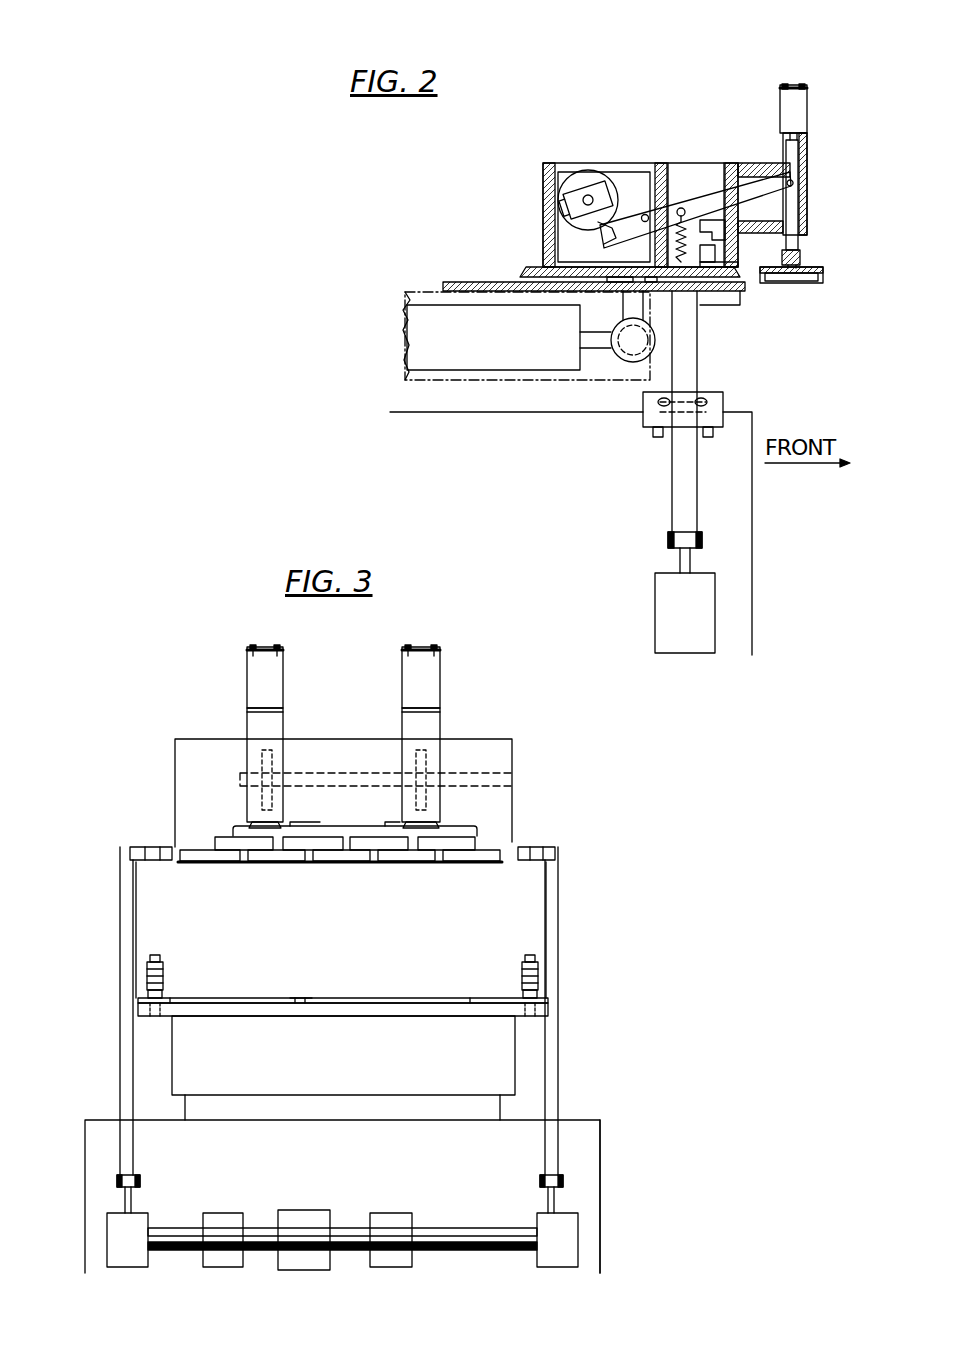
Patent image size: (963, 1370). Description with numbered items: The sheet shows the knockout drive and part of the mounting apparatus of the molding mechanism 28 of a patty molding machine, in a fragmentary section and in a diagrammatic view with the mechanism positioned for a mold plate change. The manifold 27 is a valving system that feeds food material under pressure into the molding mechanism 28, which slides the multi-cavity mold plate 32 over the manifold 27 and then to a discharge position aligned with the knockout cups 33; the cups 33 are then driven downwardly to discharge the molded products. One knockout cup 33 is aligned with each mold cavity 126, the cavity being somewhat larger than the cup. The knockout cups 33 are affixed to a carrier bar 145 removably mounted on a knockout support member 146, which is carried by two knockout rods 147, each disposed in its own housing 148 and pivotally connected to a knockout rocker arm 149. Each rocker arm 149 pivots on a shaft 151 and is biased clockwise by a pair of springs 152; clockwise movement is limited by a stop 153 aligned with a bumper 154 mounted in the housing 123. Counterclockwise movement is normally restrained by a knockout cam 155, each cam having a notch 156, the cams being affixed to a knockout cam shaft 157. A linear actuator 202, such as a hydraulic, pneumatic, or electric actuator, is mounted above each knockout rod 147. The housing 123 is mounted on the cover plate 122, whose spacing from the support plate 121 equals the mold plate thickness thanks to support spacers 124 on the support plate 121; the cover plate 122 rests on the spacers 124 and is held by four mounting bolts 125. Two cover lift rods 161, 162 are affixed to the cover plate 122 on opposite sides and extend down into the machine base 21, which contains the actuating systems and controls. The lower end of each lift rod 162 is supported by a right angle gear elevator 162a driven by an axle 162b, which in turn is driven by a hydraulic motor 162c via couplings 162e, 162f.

In FIG. 2, the machine base 21 is at (395, 412).
In FIG. 3, the machine base 21 is at (598, 1165).
In FIG. 2, the manifold 27 is at (655, 362).
In FIG. 3, the manifold 27 is at (375, 1078).
In FIG. 2, the molding mechanism 28 is at (718, 150).
In FIG. 3, the molding mechanism 28 is at (524, 712).
In FIG. 2, the mold plate 32 is at (455, 282).
In FIG. 3, the mold plate 32 is at (380, 998).
In FIG. 2, the knockout cups 33 is at (822, 272).
In FIG. 3, the knockout cups 33 is at (280, 862).
In FIG. 2, the support plate 121 is at (740, 300).
In FIG. 3, the support plate 121 is at (280, 1016).
In FIG. 2, the cover plate 122 is at (530, 266).
In FIG. 3, the cover plate 122 is at (135, 846).
In FIG. 2, the housing 123 is at (548, 185).
In FIG. 3, the housing 123 is at (190, 752).
In FIG. 3, the support spacers 124 is at (145, 998).
In FIG. 3, the mounting bolts 125 is at (170, 962).
In FIG. 2, the mold cavities 126 is at (648, 292).
In FIG. 3, the mold cavities 126 is at (290, 998).
In FIG. 3, the carrier bar 145 is at (472, 828).
In FIG. 2, the knockout support member 146 is at (800, 256).
In FIG. 3, the knockout support member 146 is at (300, 826).
In FIG. 2, the knockout rods 147 is at (798, 200).
In FIG. 3, the knockout rods 147 is at (250, 826).
In FIG. 2, the housing 148 is at (806, 160).
In FIG. 3, the housing 148 is at (248, 720).
In FIG. 2, the knockout rocker arm 149 is at (768, 178).
In FIG. 2, the shaft 151 is at (645, 214).
In FIG. 2, the springs 152 is at (710, 232).
In FIG. 2, the stop 153 is at (738, 278).
In FIG. 2, the bumper 154 is at (712, 262).
In FIG. 2, the knockout cam 155 is at (585, 172).
In FIG. 2, the notch 156 is at (606, 238).
In FIG. 2, the knockout cam shaft 157 is at (613, 200).
In FIG. 3, the cover lift rod 161 is at (120, 916).
In FIG. 2, the cover lift rod 162 is at (673, 495).
In FIG. 3, the cover lift rod 162 is at (560, 922).
In FIG. 2, the right angle gear elevator 162a is at (660, 592).
In FIG. 3, the right angle gear elevator 162a is at (120, 1268).
In FIG. 3, the axle 162b is at (430, 1228).
In FIG. 3, the hydraulic motor 162c is at (305, 1270).
In FIG. 3, the coupling 162e is at (228, 1268).
In FIG. 3, the coupling 162f is at (390, 1268).
In FIG. 2, the linear actuator 202 is at (808, 110).
In FIG. 3, the linear actuator 202 is at (250, 660).